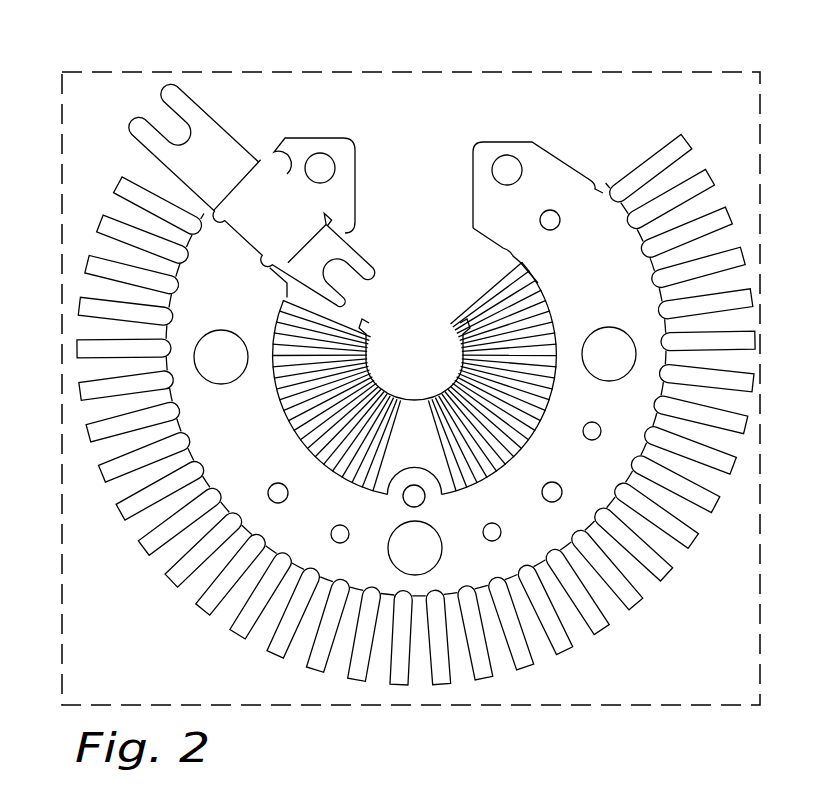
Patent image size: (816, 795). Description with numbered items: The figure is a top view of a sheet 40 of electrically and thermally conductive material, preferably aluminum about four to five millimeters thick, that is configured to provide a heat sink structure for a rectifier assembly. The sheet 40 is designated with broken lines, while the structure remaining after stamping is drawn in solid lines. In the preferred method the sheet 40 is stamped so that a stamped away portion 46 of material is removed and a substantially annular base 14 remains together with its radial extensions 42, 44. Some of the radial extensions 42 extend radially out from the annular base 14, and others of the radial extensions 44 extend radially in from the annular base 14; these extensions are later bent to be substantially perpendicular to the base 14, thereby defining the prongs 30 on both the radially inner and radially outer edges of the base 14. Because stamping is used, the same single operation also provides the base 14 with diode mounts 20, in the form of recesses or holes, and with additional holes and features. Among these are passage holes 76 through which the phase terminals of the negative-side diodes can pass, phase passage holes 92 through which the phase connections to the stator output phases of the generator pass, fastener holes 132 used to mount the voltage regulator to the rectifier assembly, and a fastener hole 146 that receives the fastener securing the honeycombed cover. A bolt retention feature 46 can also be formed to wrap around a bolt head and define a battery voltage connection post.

The substantially annular base 14 is at (243, 428).
The diode mounts 20 is at (222, 346).
The prongs 30 is at (87, 434).
The sheet 40 is at (657, 70).
The radial extensions 42 is at (78, 351).
The radial extensions 44 is at (459, 320).
The stamped away portion / bolt retention feature 46 is at (143, 140).
The passage holes 76 is at (557, 218).
The phase passage holes 92 is at (598, 429).
The fastener holes 132 is at (320, 163).
The fastener hole 146 is at (415, 486).